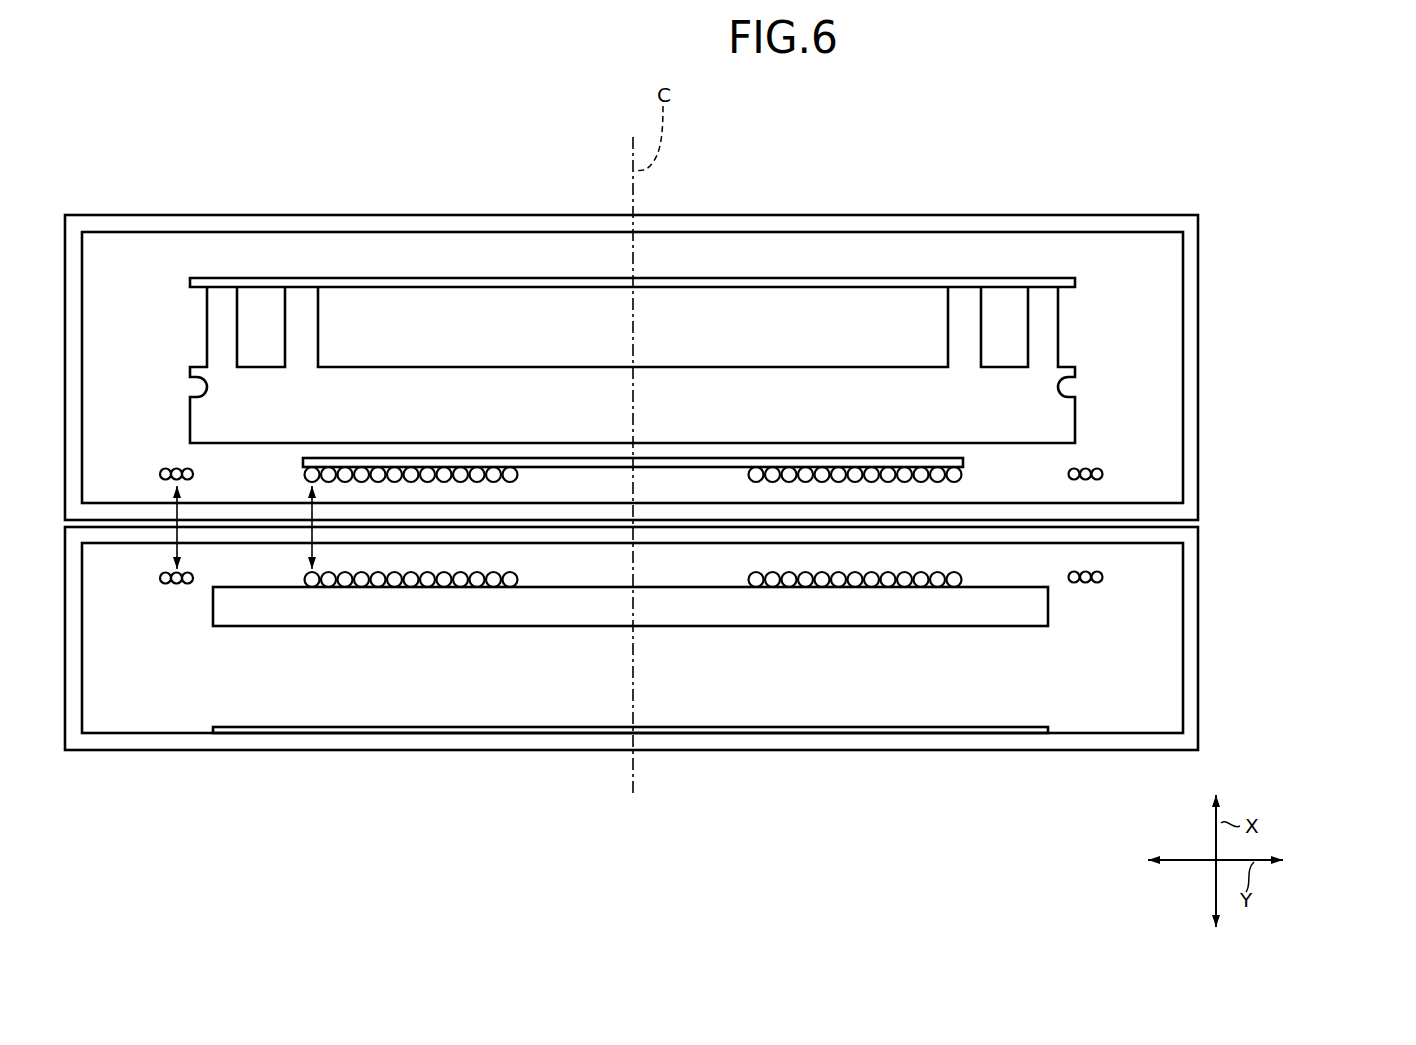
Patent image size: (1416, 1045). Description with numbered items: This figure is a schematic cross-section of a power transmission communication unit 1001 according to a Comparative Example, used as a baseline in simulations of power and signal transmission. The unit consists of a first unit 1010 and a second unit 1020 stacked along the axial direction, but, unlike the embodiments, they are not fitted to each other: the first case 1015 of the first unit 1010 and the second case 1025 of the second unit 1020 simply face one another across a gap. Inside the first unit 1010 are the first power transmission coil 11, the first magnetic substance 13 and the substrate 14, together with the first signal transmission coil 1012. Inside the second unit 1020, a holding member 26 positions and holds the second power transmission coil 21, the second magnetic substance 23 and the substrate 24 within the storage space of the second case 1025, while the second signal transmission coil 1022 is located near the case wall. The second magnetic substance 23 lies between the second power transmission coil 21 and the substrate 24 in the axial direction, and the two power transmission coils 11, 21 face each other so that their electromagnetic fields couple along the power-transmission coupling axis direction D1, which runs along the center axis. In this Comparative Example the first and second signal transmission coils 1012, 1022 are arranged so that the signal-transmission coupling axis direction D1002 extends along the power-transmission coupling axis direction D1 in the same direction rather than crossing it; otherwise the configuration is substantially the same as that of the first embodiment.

The power transmission communication unit 1001 is at (1328, 448).
The second unit 1020 is at (1209, 427).
The first unit 1010 is at (1209, 626).
The housing of second unit 1025 is at (729, 211).
The first case 1015 is at (733, 755).
The second signal transmission coil 1022 is at (176, 463).
The first signal transmission coil 1012 is at (1087, 589).
The substrate 24 is at (557, 276).
The holding member 26 is at (418, 363).
The second magnetic substance 23 is at (535, 456).
The second power transmission coil 21 is at (302, 471).
The first magnetic substance 13 is at (910, 630).
The substrate 14 is at (846, 737).
The first power transmission coil 11 is at (964, 578).
The distance between positioning protrusions D1002 is at (177, 550).
The power-transmission coupling axis direction D1 is at (312, 550).